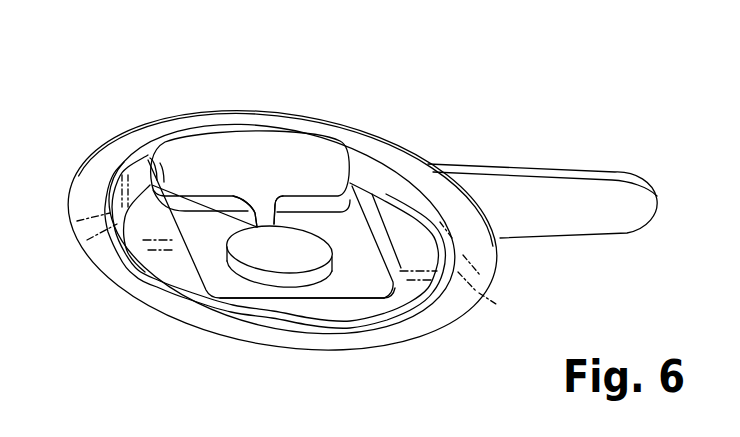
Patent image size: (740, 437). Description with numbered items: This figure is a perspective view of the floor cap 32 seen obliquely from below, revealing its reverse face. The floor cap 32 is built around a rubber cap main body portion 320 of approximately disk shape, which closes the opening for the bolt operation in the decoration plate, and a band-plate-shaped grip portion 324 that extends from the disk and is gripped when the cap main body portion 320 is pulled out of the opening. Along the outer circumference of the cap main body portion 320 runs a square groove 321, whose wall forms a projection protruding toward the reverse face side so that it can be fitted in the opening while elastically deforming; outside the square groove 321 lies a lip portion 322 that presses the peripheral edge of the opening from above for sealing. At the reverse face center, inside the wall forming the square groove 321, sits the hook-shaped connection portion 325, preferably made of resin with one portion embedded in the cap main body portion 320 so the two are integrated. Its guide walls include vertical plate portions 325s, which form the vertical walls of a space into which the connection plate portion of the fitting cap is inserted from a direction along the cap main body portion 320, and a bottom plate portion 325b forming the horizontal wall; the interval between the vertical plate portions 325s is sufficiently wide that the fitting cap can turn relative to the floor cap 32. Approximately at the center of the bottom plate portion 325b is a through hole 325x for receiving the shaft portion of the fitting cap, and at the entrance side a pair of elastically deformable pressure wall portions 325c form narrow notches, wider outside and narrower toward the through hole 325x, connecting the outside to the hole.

The floor cap 32 is at (312, 90).
The cap main body portion 320 is at (379, 140).
The square groove 321 is at (390, 330).
The lip portion 322 is at (473, 297).
The grip portion 324 is at (565, 217).
The hook-shaped connection portion 325 is at (190, 256).
The vertical plate portions 325s is at (148, 160).
The pressure wall portions 325c is at (243, 203).
The through hole 325x is at (253, 278).
The bottom plate portion 325b is at (358, 263).